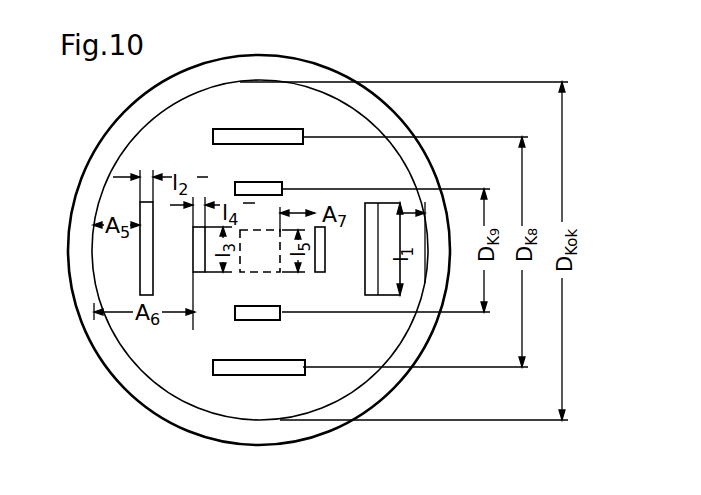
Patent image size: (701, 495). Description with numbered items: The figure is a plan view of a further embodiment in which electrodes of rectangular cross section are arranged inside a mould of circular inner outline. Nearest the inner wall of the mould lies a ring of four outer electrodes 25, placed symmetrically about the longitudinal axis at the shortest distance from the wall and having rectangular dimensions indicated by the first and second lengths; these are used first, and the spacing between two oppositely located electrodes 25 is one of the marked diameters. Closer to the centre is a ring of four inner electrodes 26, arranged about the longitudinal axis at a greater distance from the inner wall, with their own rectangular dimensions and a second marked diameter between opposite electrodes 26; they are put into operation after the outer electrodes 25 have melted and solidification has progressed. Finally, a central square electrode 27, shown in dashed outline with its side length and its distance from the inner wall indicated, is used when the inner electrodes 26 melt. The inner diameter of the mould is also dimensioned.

The outer electrode 25 is at (147, 265).
The inner electrode 26 is at (194, 330).
The central square electrode 27 is at (267, 253).